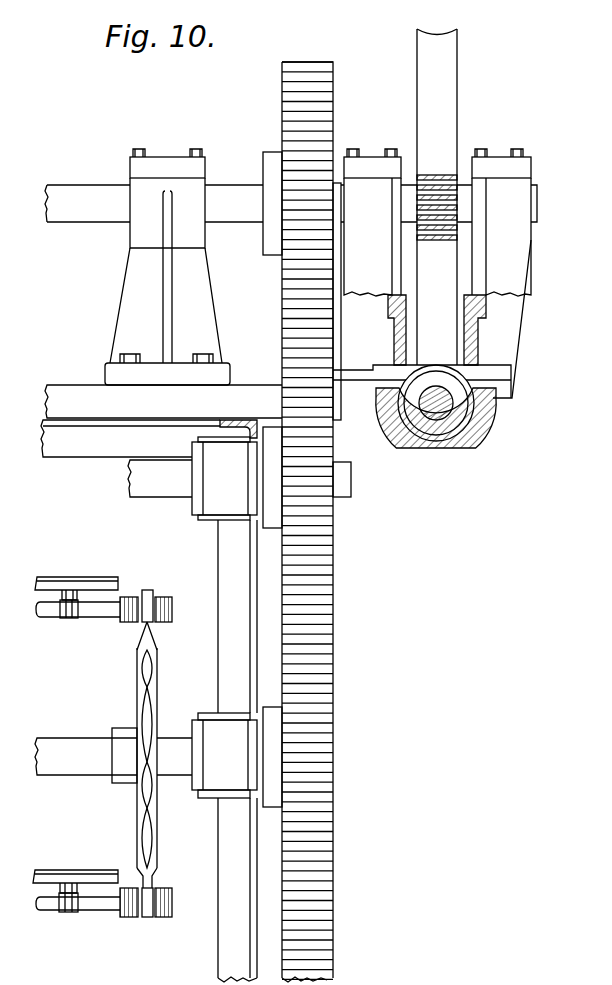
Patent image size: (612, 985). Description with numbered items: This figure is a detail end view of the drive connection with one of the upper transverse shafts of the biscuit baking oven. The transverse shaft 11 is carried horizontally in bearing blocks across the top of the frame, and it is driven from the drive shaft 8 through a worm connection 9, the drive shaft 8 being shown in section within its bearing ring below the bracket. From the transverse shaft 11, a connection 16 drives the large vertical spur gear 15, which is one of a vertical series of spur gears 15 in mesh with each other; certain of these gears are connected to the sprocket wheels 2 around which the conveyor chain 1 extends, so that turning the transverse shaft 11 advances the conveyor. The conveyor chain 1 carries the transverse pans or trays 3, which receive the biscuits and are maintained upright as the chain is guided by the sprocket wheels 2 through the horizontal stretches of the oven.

The conveyor chain 1 is at (158, 597).
The sprocket wheels 2 is at (155, 678).
The transverse pans or trays 3 is at (75, 577).
The drive shaft 8 is at (443, 407).
The worm connections 9 is at (442, 364).
The transverse shaft 11 is at (218, 198).
The spur gears 15 is at (307, 522).
The connection 16 is at (282, 368).